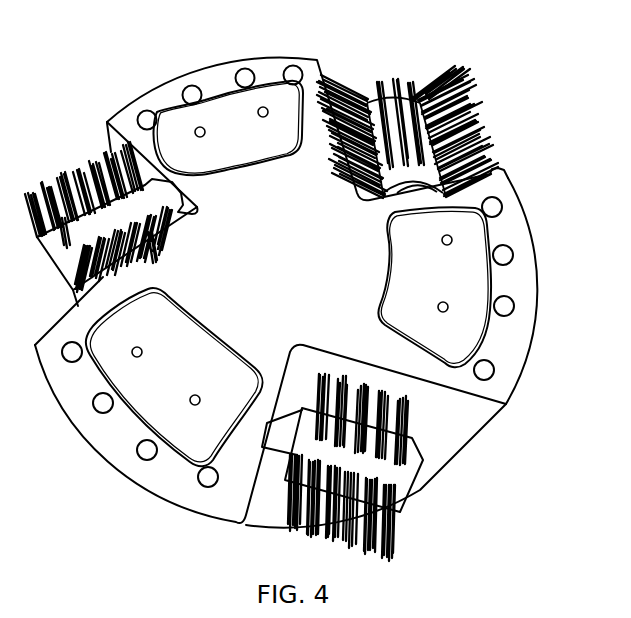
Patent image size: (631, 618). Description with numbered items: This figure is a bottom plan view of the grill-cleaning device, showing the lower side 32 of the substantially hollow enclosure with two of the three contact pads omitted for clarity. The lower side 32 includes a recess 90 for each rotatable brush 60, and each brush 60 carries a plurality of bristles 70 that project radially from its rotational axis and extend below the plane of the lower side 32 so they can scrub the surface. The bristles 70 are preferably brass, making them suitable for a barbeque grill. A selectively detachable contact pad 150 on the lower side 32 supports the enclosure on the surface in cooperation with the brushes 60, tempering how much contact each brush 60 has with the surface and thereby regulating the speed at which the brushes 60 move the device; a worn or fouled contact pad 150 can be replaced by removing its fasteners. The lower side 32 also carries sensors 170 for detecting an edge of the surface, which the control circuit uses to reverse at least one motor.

The contact pad 150 is at (221, 103).
The rotatable brush 60 is at (394, 98).
The bristles 70 is at (443, 112).
The lower side 32 is at (478, 247).
The sensor 170 is at (512, 303).
The recess 90 is at (490, 443).